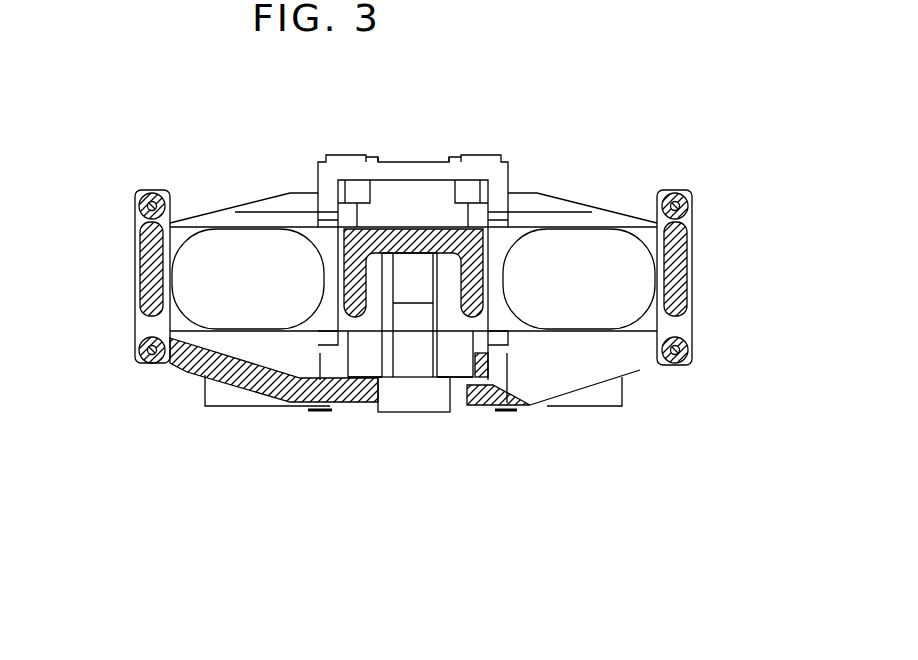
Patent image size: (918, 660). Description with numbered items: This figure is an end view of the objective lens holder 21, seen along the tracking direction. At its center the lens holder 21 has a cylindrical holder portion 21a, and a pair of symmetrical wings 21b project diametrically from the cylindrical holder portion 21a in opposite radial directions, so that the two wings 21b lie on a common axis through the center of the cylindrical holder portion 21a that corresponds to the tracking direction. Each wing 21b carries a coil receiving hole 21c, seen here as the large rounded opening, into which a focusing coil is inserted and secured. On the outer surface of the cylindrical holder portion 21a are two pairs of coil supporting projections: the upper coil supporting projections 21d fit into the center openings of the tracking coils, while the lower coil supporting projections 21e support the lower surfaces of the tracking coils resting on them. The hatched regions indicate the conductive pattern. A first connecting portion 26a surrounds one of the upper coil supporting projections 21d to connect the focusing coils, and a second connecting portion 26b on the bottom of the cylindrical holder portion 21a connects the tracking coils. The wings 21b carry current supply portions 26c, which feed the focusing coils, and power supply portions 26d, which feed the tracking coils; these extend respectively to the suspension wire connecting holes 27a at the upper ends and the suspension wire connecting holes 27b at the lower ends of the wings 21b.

The lens holder 21 is at (583, 124).
The cylindrical holder portion 21a is at (480, 160).
The wings 21b is at (217, 215).
The coil receiving holes 21c is at (157, 297).
The upper coil supporting projections 21d is at (415, 288).
The lower coil supporting projections 21e is at (430, 400).
The first connecting portion 26a is at (428, 228).
The second connecting portion 26b is at (530, 405).
The current supply portions 26c is at (147, 247).
The power supply portions 26d is at (238, 383).
The suspension wire connecting holes 27a is at (138, 193).
The suspension wire connecting holes 27b is at (138, 366).